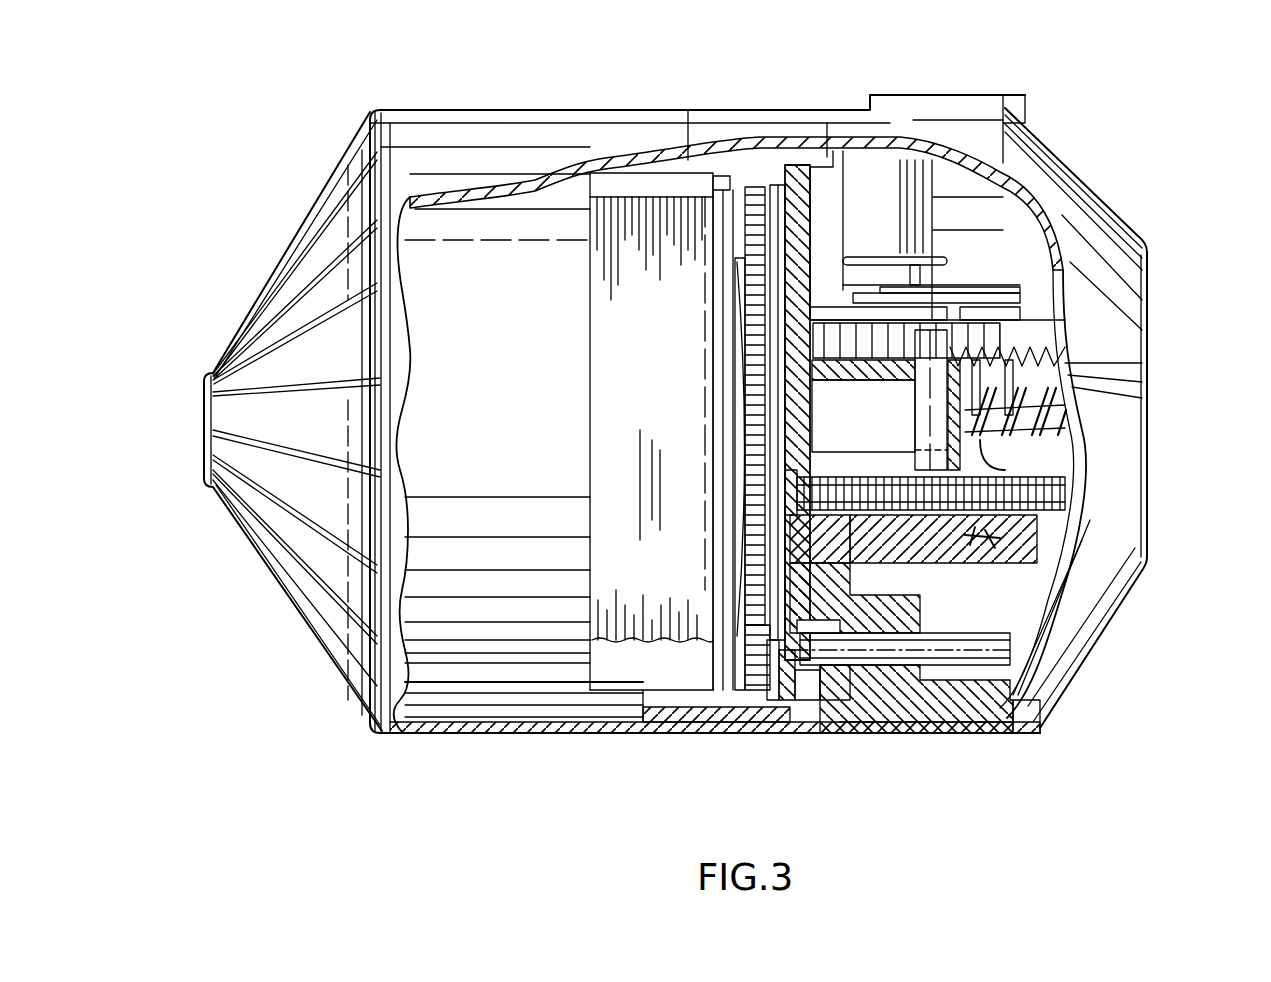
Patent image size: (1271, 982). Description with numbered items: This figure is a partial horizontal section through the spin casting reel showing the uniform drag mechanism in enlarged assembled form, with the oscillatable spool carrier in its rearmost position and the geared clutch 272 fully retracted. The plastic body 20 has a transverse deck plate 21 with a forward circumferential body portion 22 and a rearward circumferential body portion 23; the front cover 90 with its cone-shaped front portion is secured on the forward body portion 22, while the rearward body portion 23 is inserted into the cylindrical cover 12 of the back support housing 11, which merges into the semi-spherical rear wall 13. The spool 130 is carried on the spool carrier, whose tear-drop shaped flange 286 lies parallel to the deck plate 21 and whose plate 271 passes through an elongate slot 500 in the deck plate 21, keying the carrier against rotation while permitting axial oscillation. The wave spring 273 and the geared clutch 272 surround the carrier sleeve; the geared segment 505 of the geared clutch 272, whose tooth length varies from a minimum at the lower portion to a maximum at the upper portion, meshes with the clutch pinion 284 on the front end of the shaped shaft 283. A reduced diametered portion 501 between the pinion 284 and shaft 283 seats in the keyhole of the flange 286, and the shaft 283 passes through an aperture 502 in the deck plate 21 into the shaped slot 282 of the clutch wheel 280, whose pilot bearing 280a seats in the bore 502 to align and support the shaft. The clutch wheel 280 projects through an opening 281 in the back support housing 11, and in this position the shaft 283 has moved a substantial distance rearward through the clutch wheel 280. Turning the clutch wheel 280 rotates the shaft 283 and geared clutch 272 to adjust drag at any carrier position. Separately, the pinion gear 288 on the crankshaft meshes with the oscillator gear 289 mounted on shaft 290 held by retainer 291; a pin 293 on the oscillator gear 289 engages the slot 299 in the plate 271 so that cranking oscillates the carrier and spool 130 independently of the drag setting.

The body 20 is at (757, 103).
The cylindrical cover 12 is at (962, 125).
The front cover 90 is at (320, 235).
The deck plate 21 is at (800, 218).
The wave spring 273 is at (740, 288).
The geared clutch 272 is at (755, 405).
The flange 286 is at (777, 423).
The shaft 290 is at (940, 390).
The retainer 291 is at (1045, 438).
The pinion gear 288 is at (958, 452).
The oscillator gear 289 is at (1047, 492).
The pin 293 is at (1000, 545).
The rear wall 13 is at (1149, 560).
The slot 299 is at (993, 527).
The plate 271 is at (1063, 607).
The back support housing 11 is at (1063, 650).
The geared segment 505 is at (755, 580).
The elongate slot 500 is at (795, 550).
The shaped slot 282 is at (905, 640).
The spool 130 is at (668, 610).
The forward circumferential body portion 22 is at (660, 733).
The clutch pinion 284 is at (755, 680).
The reduced diametered portion 501 is at (775, 700).
The aperture 502 is at (820, 690).
The rearward circumferential body portion 23 is at (830, 690).
The pilot bearing 280a is at (833, 705).
The clutch wheel 280 is at (887, 733).
The opening 281 is at (885, 733).
The shaped shaft 283 is at (970, 655).